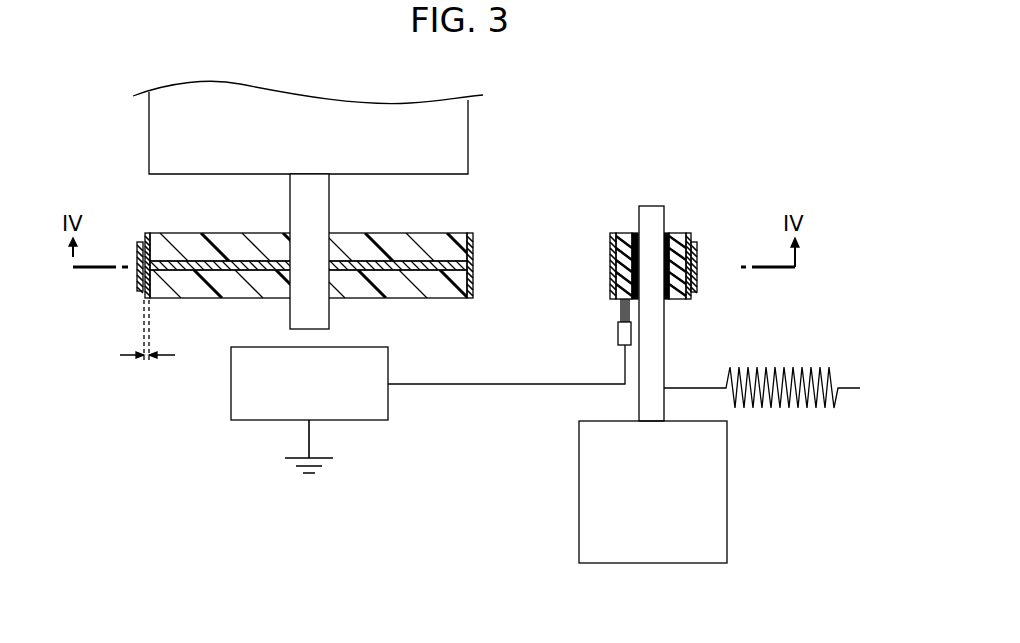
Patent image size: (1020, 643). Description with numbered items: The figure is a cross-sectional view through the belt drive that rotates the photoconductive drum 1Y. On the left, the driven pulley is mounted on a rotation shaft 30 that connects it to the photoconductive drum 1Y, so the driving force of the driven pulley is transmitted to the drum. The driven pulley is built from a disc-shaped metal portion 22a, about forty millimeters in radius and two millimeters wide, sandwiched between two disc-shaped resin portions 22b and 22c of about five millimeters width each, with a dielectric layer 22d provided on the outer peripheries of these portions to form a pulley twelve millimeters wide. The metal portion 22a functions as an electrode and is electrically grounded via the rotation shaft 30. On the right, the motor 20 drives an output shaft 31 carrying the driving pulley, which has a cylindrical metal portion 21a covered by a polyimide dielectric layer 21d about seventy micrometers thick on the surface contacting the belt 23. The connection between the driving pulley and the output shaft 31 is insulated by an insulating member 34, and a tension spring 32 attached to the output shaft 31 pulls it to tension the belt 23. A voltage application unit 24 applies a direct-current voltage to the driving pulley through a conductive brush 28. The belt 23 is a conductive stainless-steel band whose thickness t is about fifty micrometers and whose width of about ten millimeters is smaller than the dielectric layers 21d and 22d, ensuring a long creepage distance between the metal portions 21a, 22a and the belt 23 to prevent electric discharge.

The photoconductive drum 1Y is at (463, 143).
The rotation shaft 30 is at (292, 205).
The metal portion 22a is at (358, 265).
The resin portion 22b is at (400, 290).
The resin portion 22c is at (427, 248).
The dielectric layer 22d is at (145, 238).
The belt 23 is at (137, 293).
The gap width t is at (146, 360).
The voltage application unit 24 is at (388, 399).
The conductive brush 28 is at (619, 331).
The dielectric layer 21d is at (612, 233).
The metal portion 21a is at (622, 234).
The insulating member 34 is at (666, 234).
The output shaft 31 is at (661, 338).
The tension spring 32 is at (810, 367).
The motor 20 is at (583, 490).